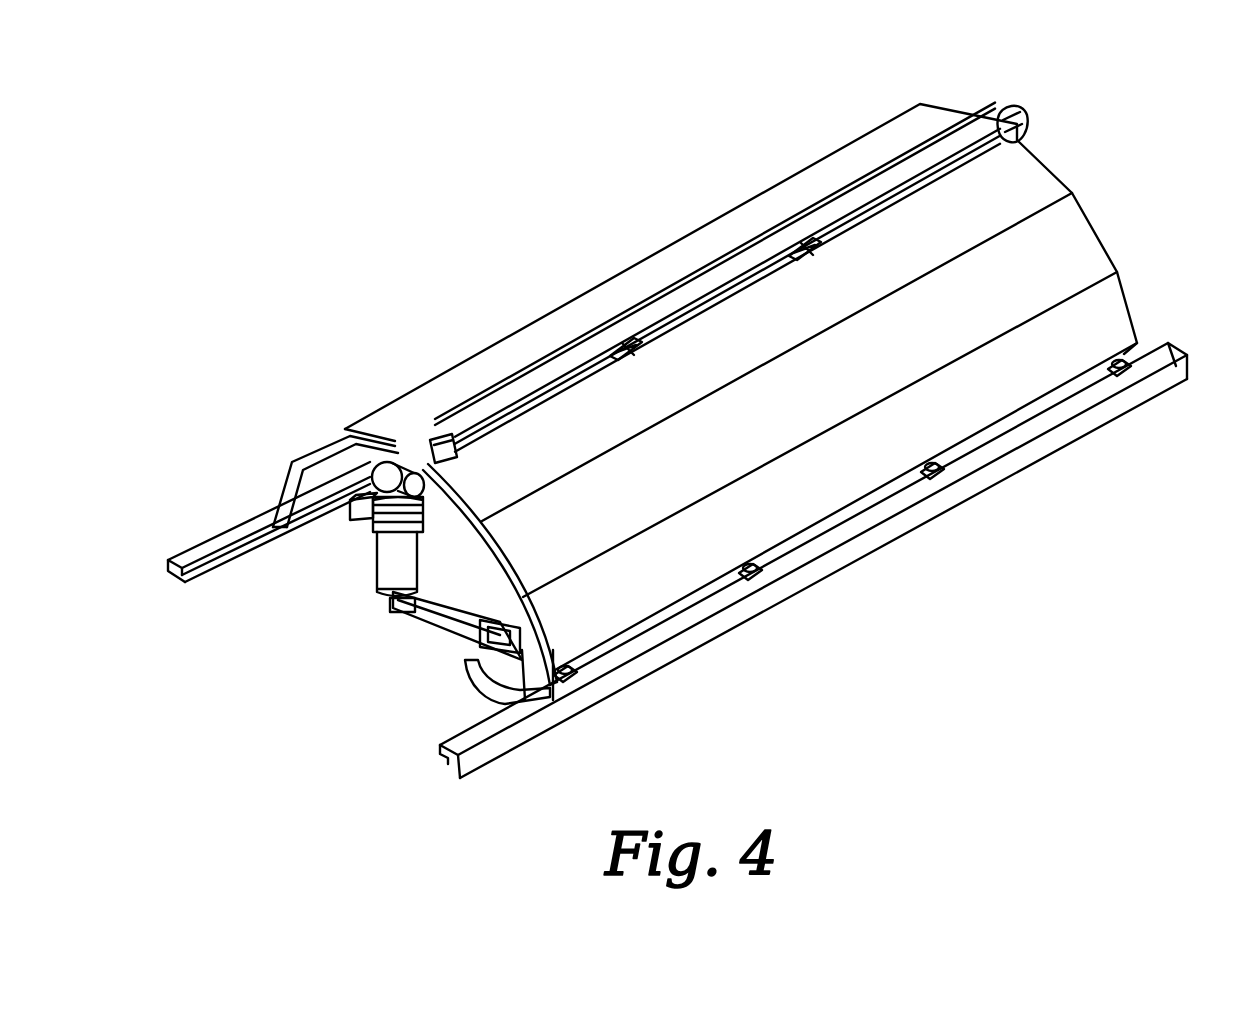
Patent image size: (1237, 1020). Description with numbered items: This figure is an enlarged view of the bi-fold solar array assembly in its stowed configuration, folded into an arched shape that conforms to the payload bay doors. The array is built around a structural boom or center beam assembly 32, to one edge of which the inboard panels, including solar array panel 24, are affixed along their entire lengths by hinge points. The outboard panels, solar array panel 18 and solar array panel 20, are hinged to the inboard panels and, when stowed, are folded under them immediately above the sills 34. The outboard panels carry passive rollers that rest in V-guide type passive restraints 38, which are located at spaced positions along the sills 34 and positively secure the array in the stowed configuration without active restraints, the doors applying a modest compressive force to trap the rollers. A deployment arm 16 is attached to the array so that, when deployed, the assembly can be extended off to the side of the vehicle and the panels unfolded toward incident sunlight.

The deployment arm 16 is at (440, 632).
The solar array panel 18 is at (300, 487).
The solar array panel 20 is at (368, 426).
The solar array panel 24 is at (1080, 237).
The center beam assembly 32 is at (528, 388).
The sill 34 is at (835, 570).
The passive restraint 38 is at (947, 477).